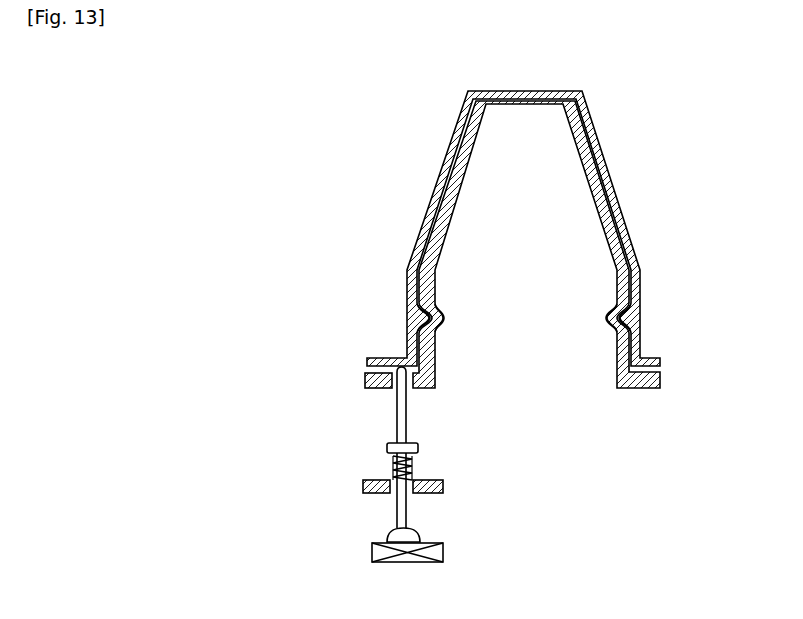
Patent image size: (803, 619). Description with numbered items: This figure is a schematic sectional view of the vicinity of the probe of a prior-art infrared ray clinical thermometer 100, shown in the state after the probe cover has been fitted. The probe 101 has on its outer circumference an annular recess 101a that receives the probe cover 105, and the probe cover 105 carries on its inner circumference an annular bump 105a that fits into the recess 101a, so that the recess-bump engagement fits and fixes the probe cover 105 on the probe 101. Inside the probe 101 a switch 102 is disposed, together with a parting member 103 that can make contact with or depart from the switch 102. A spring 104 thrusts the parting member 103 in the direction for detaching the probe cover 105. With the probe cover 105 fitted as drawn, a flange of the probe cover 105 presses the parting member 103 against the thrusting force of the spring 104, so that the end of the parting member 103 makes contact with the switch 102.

The infrared ray clinical thermometer 100 is at (360, 156).
The probe 101 is at (637, 386).
The annular recess 101a is at (438, 313).
The switch 102 is at (438, 548).
The parting member 103 is at (396, 428).
The spring 104 is at (394, 473).
The probe cover 105 is at (407, 291).
The annular bump 105a is at (438, 323).